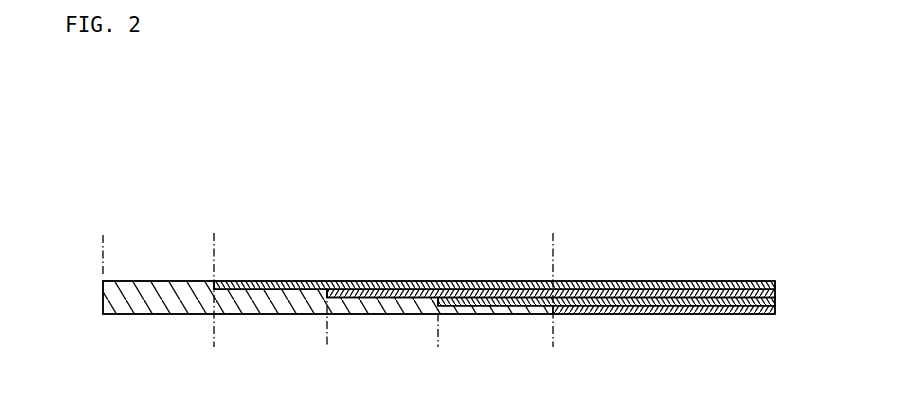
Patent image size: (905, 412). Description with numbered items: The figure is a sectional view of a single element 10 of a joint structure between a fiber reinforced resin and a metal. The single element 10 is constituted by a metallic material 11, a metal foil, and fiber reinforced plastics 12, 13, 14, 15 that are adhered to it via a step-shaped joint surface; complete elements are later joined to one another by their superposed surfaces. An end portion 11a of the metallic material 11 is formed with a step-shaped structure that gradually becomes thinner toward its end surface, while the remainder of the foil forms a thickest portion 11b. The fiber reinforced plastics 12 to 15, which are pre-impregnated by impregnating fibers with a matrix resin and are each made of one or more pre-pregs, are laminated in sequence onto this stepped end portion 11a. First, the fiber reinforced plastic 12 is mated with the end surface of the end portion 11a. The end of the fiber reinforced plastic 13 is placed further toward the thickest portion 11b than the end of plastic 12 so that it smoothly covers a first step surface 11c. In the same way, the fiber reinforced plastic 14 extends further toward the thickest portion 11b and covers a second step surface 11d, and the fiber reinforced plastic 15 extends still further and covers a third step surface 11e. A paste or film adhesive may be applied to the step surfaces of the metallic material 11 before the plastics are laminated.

The single element 10 is at (453, 155).
The metallic material 11 is at (166, 312).
The end portion 11a is at (214, 252).
The thickest portion 11b is at (214, 252).
The first step surface 11c is at (438, 330).
The second step surface 11d is at (327, 330).
The third step surface 11e is at (327, 330).
The fiber reinforced plastic 12 is at (775, 311).
The fiber reinforced plastic 13 is at (775, 299).
The fiber reinforced plastic 14 is at (775, 290).
The fiber reinforced plastic 15 is at (775, 281).